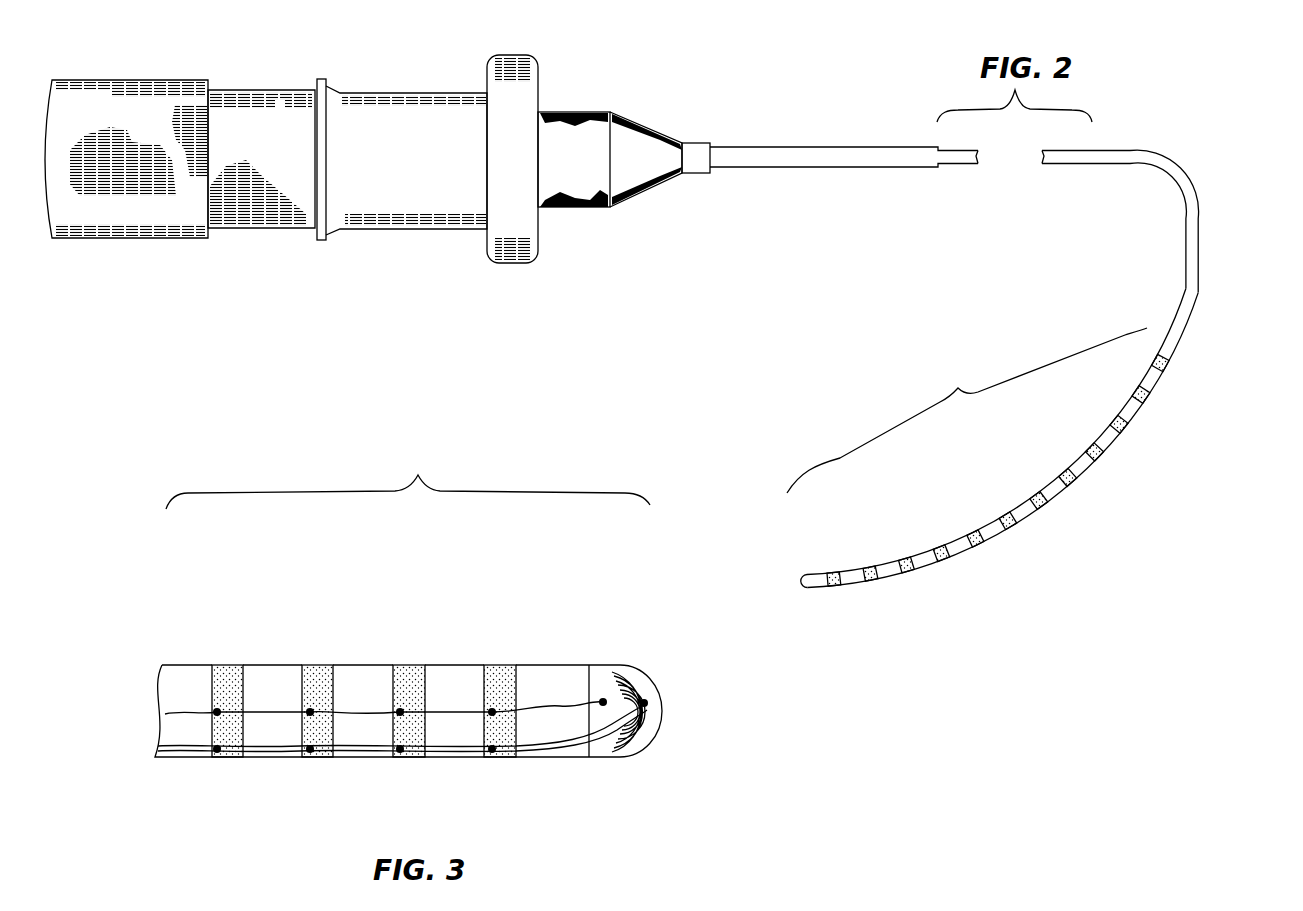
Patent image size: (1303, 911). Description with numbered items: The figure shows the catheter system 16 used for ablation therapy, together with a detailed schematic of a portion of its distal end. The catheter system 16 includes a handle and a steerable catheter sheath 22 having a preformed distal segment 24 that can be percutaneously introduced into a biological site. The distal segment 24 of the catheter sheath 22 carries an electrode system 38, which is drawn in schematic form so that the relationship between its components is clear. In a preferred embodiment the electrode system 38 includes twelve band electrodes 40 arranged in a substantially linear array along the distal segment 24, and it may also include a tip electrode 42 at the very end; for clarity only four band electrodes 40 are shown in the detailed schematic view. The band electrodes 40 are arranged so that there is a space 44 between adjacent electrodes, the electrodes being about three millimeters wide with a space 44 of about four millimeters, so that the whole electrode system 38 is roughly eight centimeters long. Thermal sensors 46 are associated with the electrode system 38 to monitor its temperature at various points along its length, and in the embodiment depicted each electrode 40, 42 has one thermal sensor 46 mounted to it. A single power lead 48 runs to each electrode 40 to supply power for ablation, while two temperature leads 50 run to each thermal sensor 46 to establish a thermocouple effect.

In FIG. 2, the catheter system 16 is at (715, 87).
In FIG. 2, the steerable catheter sheath 22 is at (1197, 205).
In FIG. 2, the distal segment 24 is at (1110, 532).
In FIG. 3, the distal segment 24 is at (98, 538).
In FIG. 2, the electrode system 38 is at (967, 410).
In FIG. 3, the electrode system 38 is at (408, 475).
In FIG. 2, the band electrodes 40 is at (904, 559).
In FIG. 3, the band electrodes 40 is at (249, 667).
In FIG. 2, the tip electrode 42 is at (807, 589).
In FIG. 3, the tip electrode 42 is at (637, 667).
In FIG. 3, the space 44 is at (283, 668).
In FIG. 3, the thermal sensors 46 is at (223, 756).
In FIG. 3, the power lead 48 is at (182, 712).
In FIG. 3, the temperature leads 50 is at (274, 745).